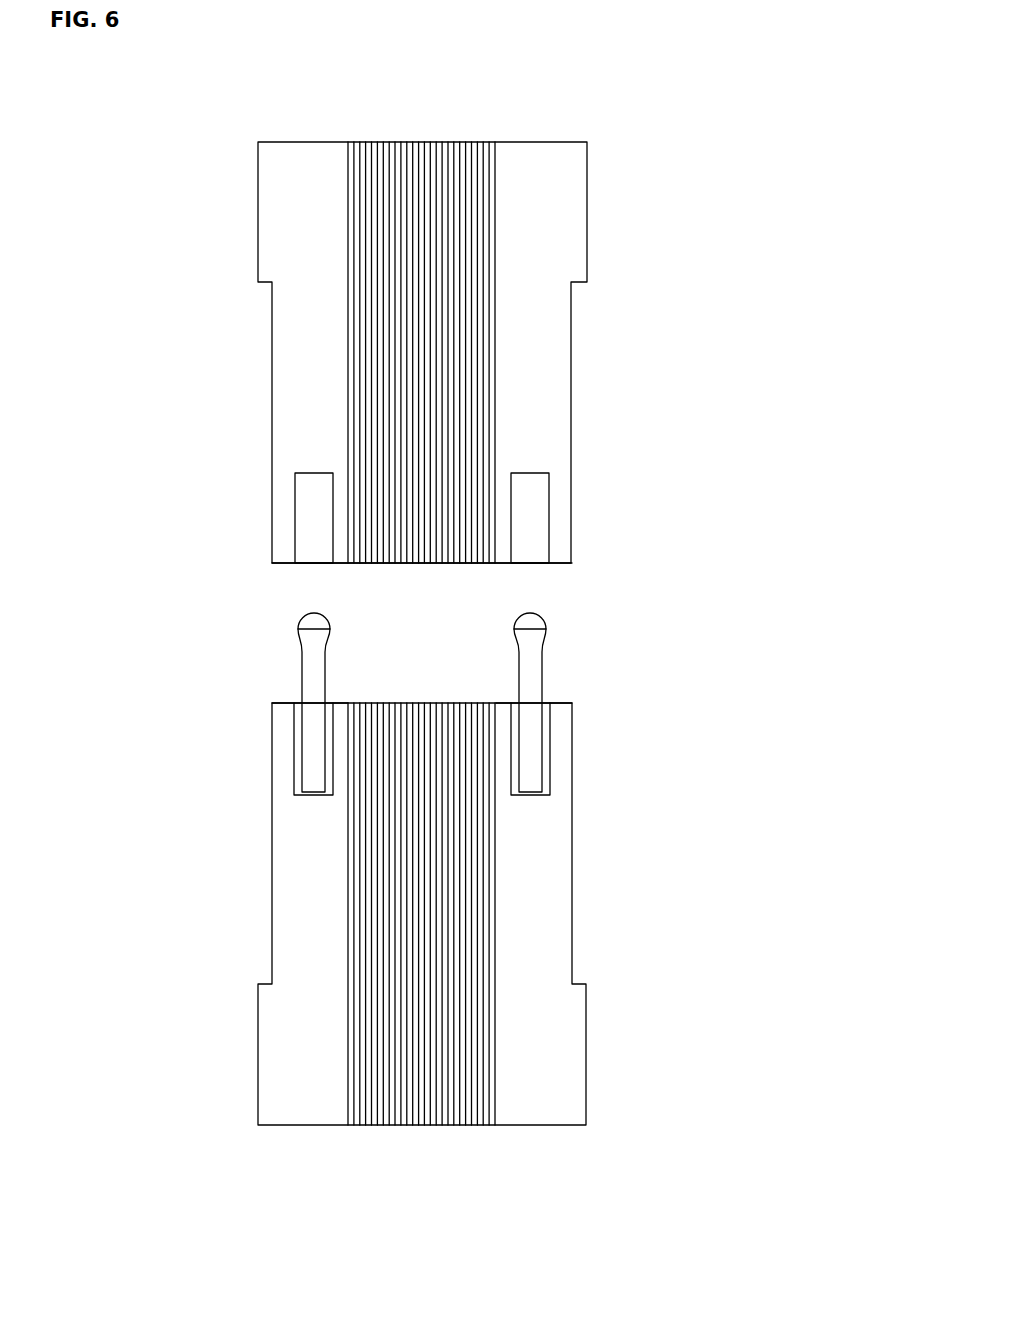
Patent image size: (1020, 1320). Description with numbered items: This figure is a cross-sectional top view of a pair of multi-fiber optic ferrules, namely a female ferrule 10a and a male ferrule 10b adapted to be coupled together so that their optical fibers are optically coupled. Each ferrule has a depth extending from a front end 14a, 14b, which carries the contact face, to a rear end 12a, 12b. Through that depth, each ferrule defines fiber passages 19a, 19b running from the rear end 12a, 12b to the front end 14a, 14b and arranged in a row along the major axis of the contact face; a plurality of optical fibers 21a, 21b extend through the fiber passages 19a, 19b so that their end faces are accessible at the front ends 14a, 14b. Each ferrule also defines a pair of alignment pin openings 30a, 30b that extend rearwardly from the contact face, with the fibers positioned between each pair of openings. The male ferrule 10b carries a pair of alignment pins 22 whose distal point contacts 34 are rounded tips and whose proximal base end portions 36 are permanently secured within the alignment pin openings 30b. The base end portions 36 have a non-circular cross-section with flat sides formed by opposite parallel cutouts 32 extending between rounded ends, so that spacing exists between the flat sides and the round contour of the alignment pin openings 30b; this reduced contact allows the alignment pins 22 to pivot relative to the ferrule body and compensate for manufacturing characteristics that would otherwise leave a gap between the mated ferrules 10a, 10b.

The female ferrule 10a is at (449, 356).
The male ferrule 10b is at (446, 921).
The rear end 12a is at (563, 135).
The rear end 12b is at (263, 1133).
The front end 14a is at (592, 570).
The front end 14b is at (258, 687).
The fiber passages 19a is at (382, 330).
The fiber passages 19b is at (327, 939).
The optical fibers 21a is at (352, 178).
The optical fibers 21b is at (352, 1031).
The alignment pins 22 is at (337, 668).
The alignment pin openings 30a is at (312, 504).
The alignment pin openings 30b is at (292, 750).
The parallel cutouts 32 is at (422, 701).
The distal point contacts 34 is at (317, 620).
The proximal base end portions 36 is at (310, 770).